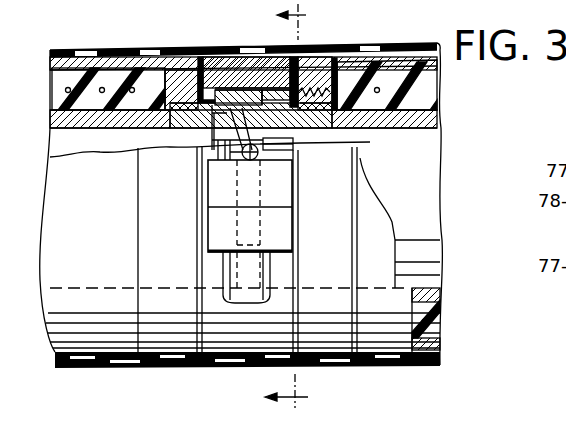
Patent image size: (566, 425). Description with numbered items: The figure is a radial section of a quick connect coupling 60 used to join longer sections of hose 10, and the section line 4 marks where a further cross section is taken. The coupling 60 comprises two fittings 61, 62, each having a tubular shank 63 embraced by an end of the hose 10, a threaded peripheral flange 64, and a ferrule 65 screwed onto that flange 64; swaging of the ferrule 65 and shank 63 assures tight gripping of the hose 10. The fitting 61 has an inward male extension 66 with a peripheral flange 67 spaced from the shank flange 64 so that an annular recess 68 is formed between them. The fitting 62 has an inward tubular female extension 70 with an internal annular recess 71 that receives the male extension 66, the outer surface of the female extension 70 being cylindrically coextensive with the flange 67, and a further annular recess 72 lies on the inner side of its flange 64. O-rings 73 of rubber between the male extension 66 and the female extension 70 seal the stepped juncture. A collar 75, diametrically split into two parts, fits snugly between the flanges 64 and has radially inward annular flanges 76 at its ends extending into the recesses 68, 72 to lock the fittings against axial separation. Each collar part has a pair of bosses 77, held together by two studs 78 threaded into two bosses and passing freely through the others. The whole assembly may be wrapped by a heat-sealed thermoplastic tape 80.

The section line 4- 4 is at (297, 207).
The hose 10 is at (447, 95).
The coupling 60 is at (62, 128).
The fitting 61 is at (404, 138).
The fitting 62 is at (98, 155).
The tubular shank 63 is at (53, 121).
The threaded peripheral flange 64 is at (186, 58).
The ferrule 65 is at (123, 61).
The male extension 66 is at (259, 160).
The peripheral flange 67 is at (285, 56).
The annular recess 68 is at (296, 108).
The female extension 70 is at (243, 65).
The internal annular recess 71 is at (208, 127).
The annular recess 72 is at (183, 128).
The O-rings 73 is at (240, 177).
The collar 75 is at (253, 60).
The annular flanges 76 is at (213, 62).
The bosses 77 is at (220, 223).
The studs 78 is at (294, 148).
The thermoplastic tape 80 is at (91, 53).